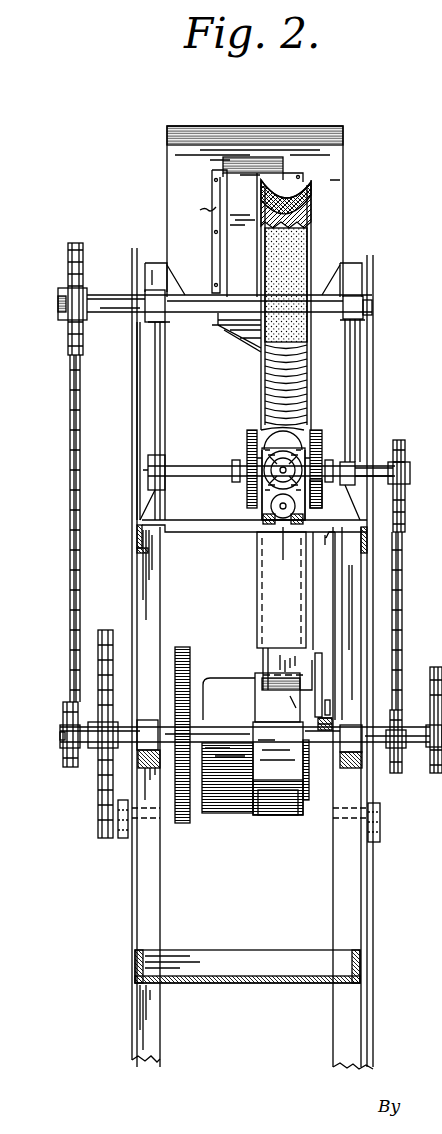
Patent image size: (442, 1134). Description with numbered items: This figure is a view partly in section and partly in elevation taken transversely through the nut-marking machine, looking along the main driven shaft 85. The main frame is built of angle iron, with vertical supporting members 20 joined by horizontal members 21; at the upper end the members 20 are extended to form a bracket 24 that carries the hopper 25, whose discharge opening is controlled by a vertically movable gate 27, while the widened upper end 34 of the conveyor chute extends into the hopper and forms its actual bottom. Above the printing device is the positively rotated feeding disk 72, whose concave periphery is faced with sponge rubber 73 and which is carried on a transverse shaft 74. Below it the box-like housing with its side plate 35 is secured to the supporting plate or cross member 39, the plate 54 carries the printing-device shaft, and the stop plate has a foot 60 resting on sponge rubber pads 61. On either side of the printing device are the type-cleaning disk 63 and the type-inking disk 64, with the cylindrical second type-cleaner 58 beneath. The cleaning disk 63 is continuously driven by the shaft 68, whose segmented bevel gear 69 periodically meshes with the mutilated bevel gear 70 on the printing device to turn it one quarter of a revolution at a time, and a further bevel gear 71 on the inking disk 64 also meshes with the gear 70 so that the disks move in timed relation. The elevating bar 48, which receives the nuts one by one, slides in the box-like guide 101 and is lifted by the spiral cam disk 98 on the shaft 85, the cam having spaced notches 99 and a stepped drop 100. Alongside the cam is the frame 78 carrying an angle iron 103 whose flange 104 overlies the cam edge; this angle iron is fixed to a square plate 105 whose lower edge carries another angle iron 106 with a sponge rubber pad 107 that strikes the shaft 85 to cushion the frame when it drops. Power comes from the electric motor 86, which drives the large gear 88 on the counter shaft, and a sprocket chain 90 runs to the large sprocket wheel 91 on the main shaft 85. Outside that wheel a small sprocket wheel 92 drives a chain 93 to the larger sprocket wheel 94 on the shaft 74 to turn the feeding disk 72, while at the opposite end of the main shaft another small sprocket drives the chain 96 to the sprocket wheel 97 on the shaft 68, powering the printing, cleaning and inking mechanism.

The vertical supporting members 20 is at (160, 924).
The top horizontal member 21 is at (358, 556).
The bracket 24 is at (345, 280).
The hopper 25 is at (177, 162).
The gate 27 is at (241, 227).
The widened upper end of chute 34 is at (252, 353).
The side plate 35 is at (398, 777).
The supporting plate or cross member 39 is at (208, 530).
The elevating rod or bar 48 is at (266, 656).
The plate 54 is at (262, 489).
The type-cleaner cylinder 58 is at (285, 528).
The flange or foot 60 is at (270, 510).
The sponge rubber pads 61 is at (265, 530).
The type-cleaning disk 63 is at (320, 437).
The type-inking disk 64 is at (247, 434).
The shaft 68 is at (378, 470).
The segmented bevel gear 69 is at (322, 494).
The mutilated bevel gear 70 is at (283, 458).
The bevel gear 71 is at (262, 462).
The feeding disk or cylinder 72 is at (311, 214).
The sponge rubber facing 73 is at (302, 184).
The shaft 74 is at (198, 310).
The frame 78 is at (322, 656).
The main driven shaft 85 is at (222, 728).
The electric motor 86 is at (222, 790).
The large gear 88 is at (187, 719).
The sprocket chain 90 is at (104, 628).
The large sprocket wheel 91 is at (106, 833).
The small sprocket wheel 92 is at (70, 762).
The sprocket chain 93 is at (70, 531).
The sprocket wheel 94 is at (67, 349).
The sprocket chain 96 is at (402, 597).
The sprocket wheel 97 is at (406, 458).
The spiral cam disk 98 is at (280, 816).
The notches 99 is at (262, 790).
The curved stepped portion or drop 100 is at (257, 684).
The box-like guide 101 is at (256, 592).
The angle iron 103 is at (318, 701).
The flange 104 is at (286, 690).
The square plate 105 is at (300, 675).
The angle iron 106 is at (322, 714).
The sponge rubber pad 107 is at (330, 726).